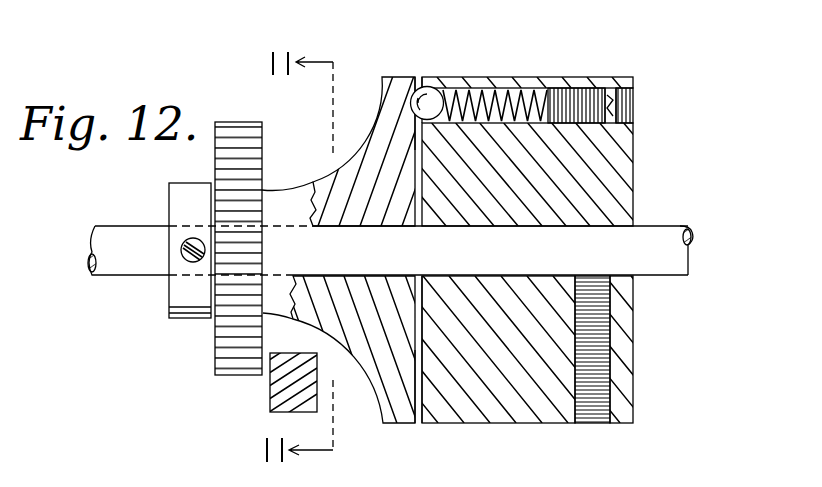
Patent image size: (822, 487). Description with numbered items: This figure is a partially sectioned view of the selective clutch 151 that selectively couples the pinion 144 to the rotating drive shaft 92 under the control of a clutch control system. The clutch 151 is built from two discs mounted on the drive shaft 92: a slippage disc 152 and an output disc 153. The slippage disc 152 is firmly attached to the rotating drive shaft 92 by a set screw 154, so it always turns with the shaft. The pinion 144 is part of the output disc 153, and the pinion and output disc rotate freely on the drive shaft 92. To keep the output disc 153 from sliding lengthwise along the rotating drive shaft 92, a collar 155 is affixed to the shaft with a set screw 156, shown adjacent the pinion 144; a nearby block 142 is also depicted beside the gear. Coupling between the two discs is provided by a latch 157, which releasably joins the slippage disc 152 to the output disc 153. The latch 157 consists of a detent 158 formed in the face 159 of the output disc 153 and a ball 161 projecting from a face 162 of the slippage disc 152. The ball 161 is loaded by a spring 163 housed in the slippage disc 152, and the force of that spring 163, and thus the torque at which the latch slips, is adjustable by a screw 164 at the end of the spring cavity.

The rotating drive shaft 92 is at (108, 228).
The block 142 is at (270, 397).
The pinion 144 is at (213, 348).
The selective clutch 151 is at (521, 221).
The slippage disc 152 is at (634, 150).
The output disc 153 is at (375, 127).
The set screw 154 is at (603, 367).
The collar 155 is at (175, 205).
The set screw 156 is at (188, 259).
The latch 157 is at (416, 60).
The detent 158 is at (406, 92).
The face of the output disc 159 is at (418, 424).
The ball 161 is at (431, 90).
The face of the slippage disc 162 is at (425, 382).
The spring 163 is at (532, 88).
The screw 164 is at (606, 90).